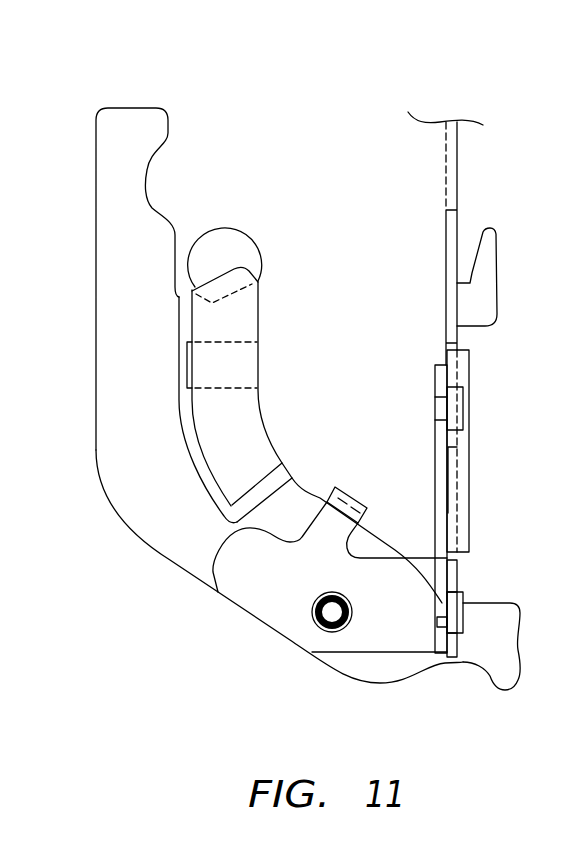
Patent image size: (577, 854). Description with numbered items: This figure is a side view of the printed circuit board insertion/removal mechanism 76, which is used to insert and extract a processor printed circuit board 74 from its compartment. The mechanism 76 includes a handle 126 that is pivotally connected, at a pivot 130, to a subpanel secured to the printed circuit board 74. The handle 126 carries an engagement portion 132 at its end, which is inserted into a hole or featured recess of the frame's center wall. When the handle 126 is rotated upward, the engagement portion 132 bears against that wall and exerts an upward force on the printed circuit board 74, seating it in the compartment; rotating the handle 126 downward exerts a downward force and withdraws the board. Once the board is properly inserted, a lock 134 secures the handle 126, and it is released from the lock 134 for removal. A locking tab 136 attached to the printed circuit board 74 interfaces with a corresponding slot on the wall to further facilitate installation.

The printed circuit board insertion/removal mechanism 76 is at (196, 74).
The processor printed circuit board 74 is at (458, 173).
The handle 126 is at (140, 223).
The pivot 130 is at (311, 617).
The engagement portion 132 is at (495, 630).
The lock 134 is at (248, 320).
The locking tab 136 is at (488, 277).